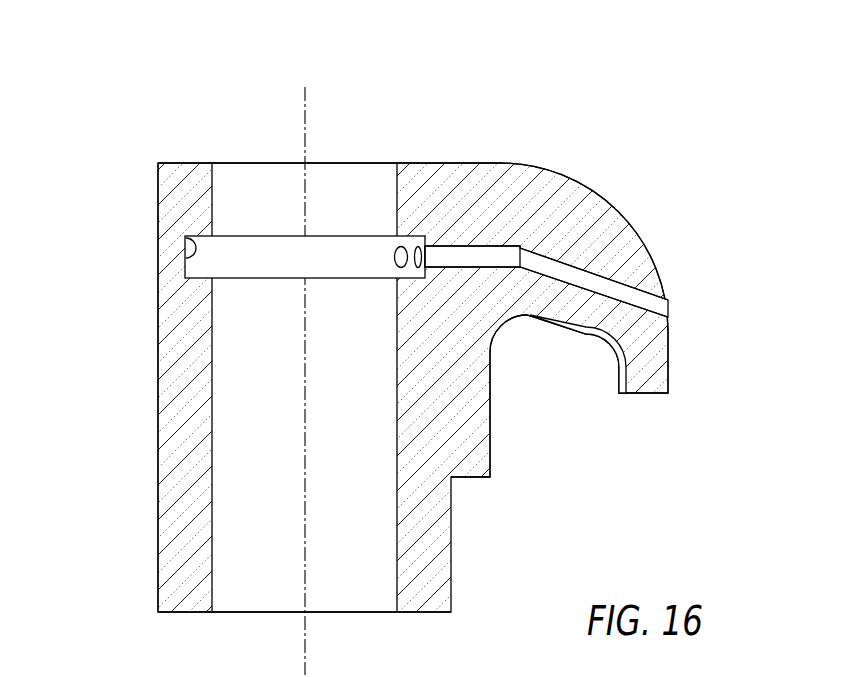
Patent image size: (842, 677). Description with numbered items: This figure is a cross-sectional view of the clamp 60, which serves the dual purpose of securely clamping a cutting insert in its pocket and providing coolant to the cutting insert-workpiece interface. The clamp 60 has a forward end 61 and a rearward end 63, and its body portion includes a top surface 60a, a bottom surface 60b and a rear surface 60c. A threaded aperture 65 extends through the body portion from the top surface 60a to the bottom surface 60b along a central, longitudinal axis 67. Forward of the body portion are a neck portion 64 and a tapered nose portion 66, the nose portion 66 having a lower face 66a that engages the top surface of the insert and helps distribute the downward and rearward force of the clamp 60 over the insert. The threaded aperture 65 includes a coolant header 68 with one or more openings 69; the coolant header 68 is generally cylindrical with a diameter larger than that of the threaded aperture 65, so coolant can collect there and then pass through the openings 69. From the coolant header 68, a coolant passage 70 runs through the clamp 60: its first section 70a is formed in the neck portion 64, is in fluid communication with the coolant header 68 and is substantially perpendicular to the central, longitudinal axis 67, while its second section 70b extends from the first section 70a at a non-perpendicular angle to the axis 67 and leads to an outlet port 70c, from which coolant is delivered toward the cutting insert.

The clamp 60 is at (197, 82).
The top surface 60a is at (180, 160).
The bottom surface 60b is at (185, 612).
The rear surface 60c is at (158, 376).
The forward end 61 is at (692, 224).
The rearward end 63 is at (138, 279).
The neck portion 64 is at (512, 402).
The threaded aperture 65 is at (397, 205).
The tapered nose portion 66 is at (665, 198).
The lower face 66a is at (650, 395).
The central longitudinal axis 67 is at (307, 115).
The coolant header 68 is at (186, 238).
The openings 69 is at (398, 258).
The coolant passages 70 is at (482, 278).
The first section 70a is at (470, 255).
The second section 70b is at (553, 262).
The outlet port 70c is at (668, 312).